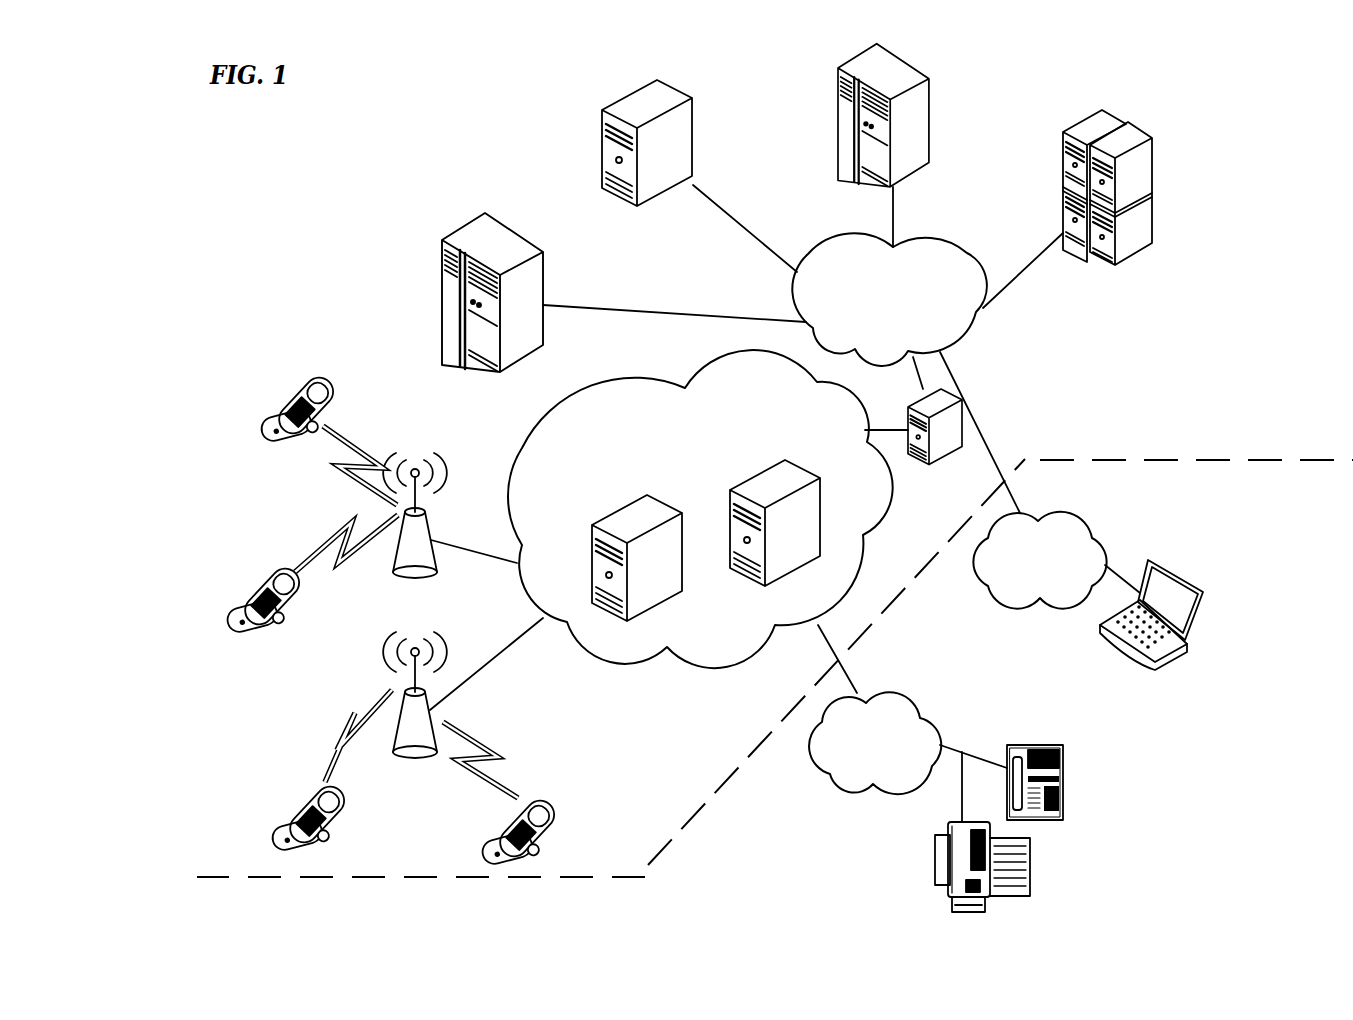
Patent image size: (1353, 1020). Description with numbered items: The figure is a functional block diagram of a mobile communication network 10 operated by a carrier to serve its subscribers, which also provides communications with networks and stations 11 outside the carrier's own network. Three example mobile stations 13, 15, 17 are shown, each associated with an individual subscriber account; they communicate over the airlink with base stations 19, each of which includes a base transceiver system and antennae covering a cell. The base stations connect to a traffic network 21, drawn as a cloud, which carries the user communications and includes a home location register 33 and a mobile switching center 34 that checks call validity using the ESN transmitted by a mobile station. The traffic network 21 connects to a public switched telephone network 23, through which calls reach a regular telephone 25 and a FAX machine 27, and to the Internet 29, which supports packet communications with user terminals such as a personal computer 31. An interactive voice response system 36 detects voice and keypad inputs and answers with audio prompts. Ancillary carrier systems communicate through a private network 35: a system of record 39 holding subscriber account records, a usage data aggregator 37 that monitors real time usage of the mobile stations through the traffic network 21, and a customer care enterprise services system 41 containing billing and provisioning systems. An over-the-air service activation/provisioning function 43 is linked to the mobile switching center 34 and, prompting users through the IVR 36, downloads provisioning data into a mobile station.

The mobile communication network 10 is at (442, 178).
The networks and stations outside the mobile communication network 11 is at (775, 668).
The mobile station 13 is at (293, 393).
The mobile station 15 is at (283, 830).
The mobile station 17 is at (546, 805).
The base station 19 is at (428, 507).
The traffic network 21 is at (697, 666).
The public switched telephone network 23 is at (831, 780).
The telephone 25 is at (1064, 762).
The FAX machine 27 is at (936, 862).
The Internet 29 is at (1096, 540).
The personal computer 31 is at (1176, 575).
The home location register 33 is at (613, 517).
The mobile switching center 34 is at (736, 491).
The private network 35 is at (952, 247).
The interactive voice response system 36 is at (441, 291).
The usage data aggregator 37 is at (837, 112).
The system of record 39 is at (601, 152).
The customer care enterprise services system 41 is at (1105, 111).
The over-the-air service activation/provisioning function 43 is at (961, 426).